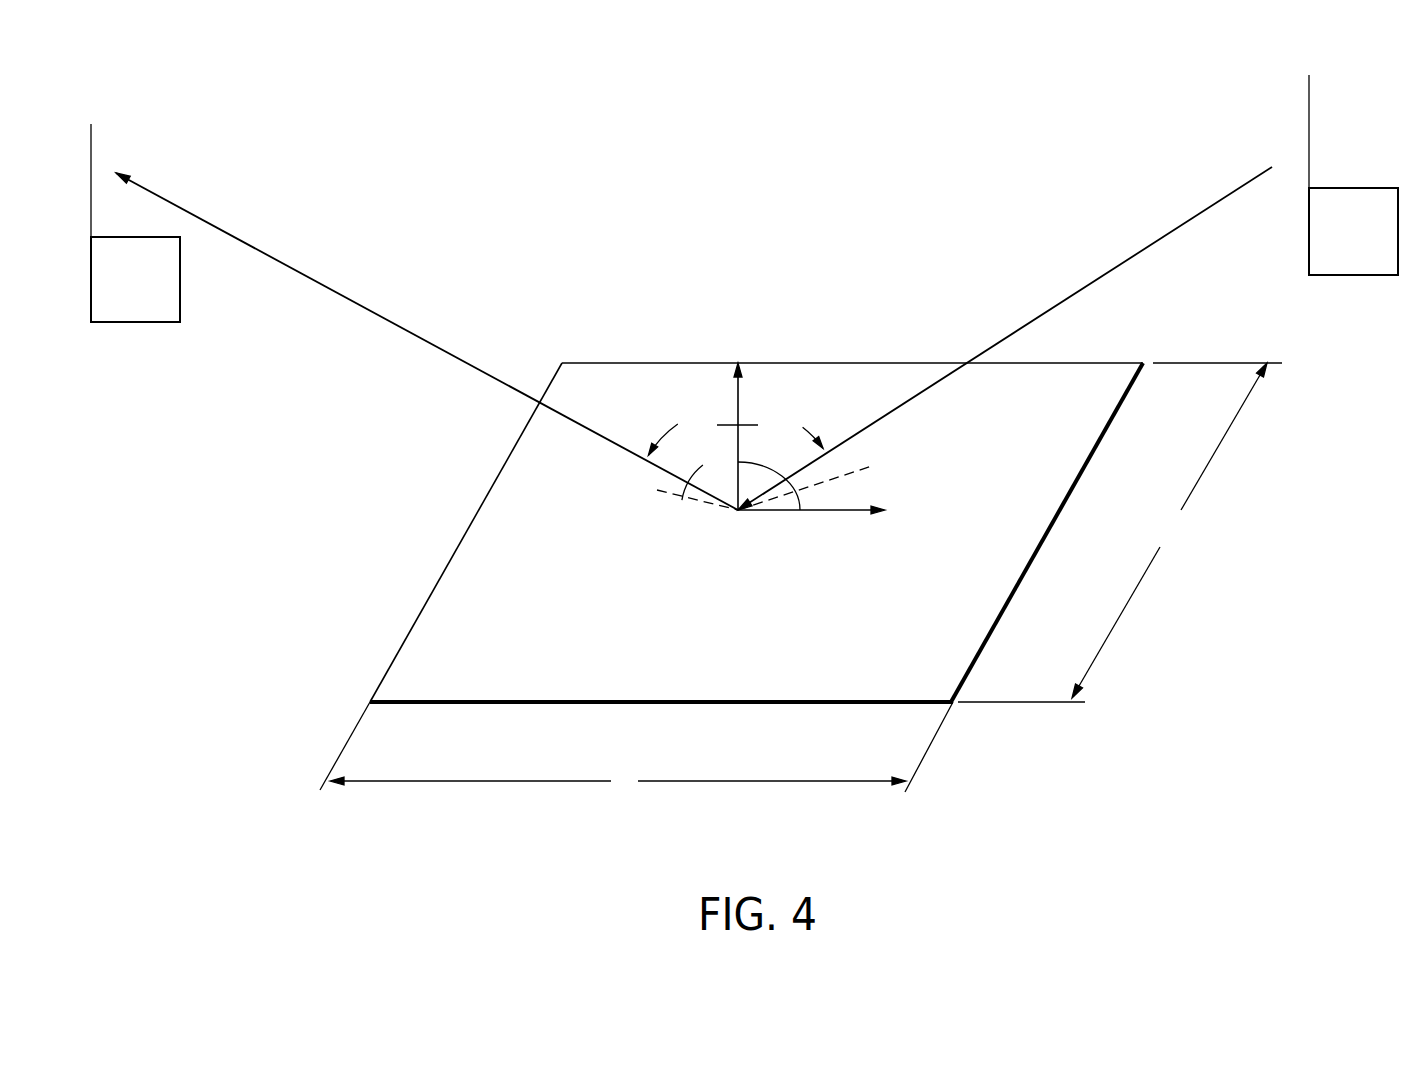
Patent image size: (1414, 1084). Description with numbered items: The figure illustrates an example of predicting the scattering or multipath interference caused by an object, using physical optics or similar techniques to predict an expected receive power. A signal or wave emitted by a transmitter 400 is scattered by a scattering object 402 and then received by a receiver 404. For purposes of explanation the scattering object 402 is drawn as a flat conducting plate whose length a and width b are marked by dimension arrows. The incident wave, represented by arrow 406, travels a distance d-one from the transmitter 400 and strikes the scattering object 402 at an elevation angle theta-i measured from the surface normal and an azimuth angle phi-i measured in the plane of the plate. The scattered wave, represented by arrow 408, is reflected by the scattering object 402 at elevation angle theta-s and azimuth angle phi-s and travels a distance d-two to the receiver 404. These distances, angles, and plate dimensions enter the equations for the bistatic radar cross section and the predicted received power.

The transmitter 400 is at (1360, 188).
The scattering object 402 is at (734, 603).
The receiver 404 is at (135, 323).
The incident wave 406 is at (1090, 285).
The scattered wave 408 is at (446, 352).